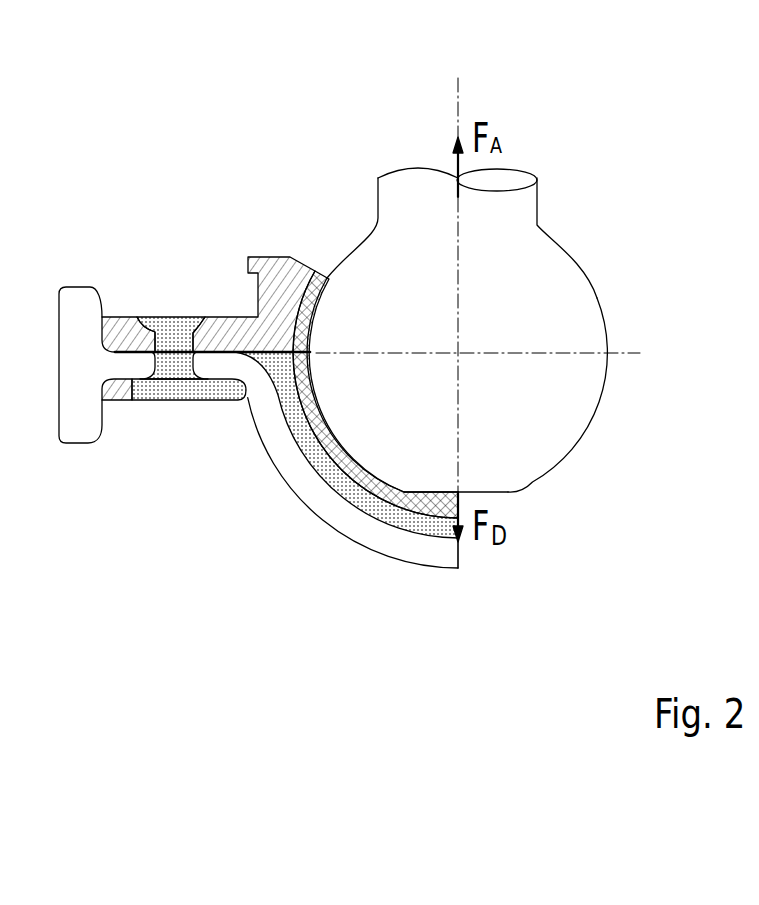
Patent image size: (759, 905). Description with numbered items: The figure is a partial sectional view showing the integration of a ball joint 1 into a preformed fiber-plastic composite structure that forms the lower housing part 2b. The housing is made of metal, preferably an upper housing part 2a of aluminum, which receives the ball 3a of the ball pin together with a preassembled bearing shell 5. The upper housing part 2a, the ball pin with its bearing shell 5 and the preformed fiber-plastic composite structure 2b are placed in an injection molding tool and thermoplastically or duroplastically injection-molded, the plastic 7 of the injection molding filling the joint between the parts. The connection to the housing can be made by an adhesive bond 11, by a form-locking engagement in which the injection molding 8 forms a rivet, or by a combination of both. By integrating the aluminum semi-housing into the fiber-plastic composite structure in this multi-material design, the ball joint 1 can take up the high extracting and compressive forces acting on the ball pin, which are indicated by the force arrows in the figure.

The ball joint 1 is at (586, 152).
The upper housing part 2a is at (273, 257).
The lower housing part 2b is at (310, 490).
The ball 3a is at (507, 423).
The bearing shell 5 is at (340, 447).
The plastic, injection molding 7 is at (372, 498).
The rivet connection, injection molding 8 is at (168, 317).
The bond 11 is at (130, 400).